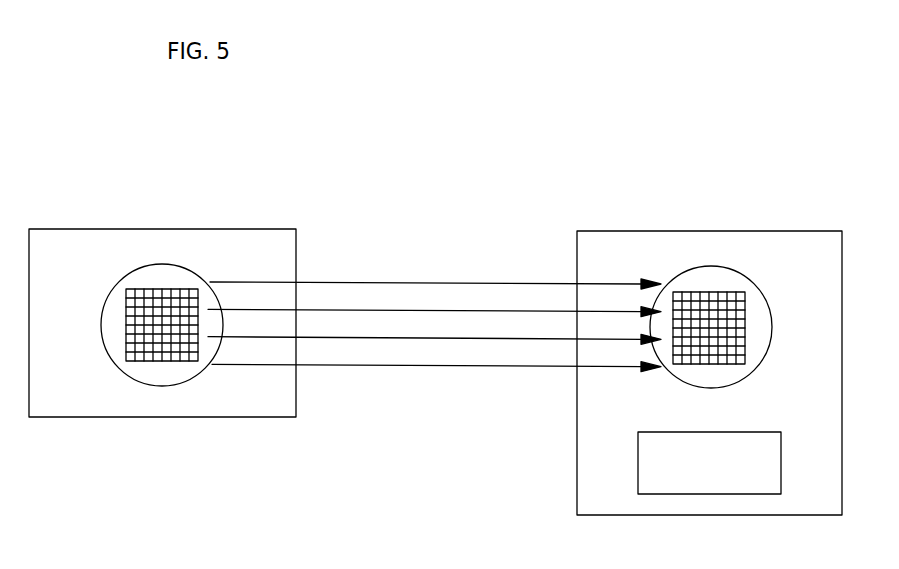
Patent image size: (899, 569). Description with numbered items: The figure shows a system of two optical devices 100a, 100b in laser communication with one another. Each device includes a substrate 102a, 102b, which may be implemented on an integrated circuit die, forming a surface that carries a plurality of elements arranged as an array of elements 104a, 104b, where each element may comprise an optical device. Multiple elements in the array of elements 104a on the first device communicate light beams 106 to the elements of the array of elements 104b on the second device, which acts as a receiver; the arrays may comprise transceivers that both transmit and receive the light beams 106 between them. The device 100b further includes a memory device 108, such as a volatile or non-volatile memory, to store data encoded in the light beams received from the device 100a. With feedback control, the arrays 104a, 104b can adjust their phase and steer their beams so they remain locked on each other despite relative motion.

The device 100a is at (222, 229).
The substrate 102a is at (118, 280).
The array of elements 104a is at (163, 270).
The device 100b is at (665, 231).
The substrate 102b is at (748, 280).
The array of elements 104b is at (711, 270).
The light beams 106 is at (492, 264).
The memory device 108 is at (637, 432).